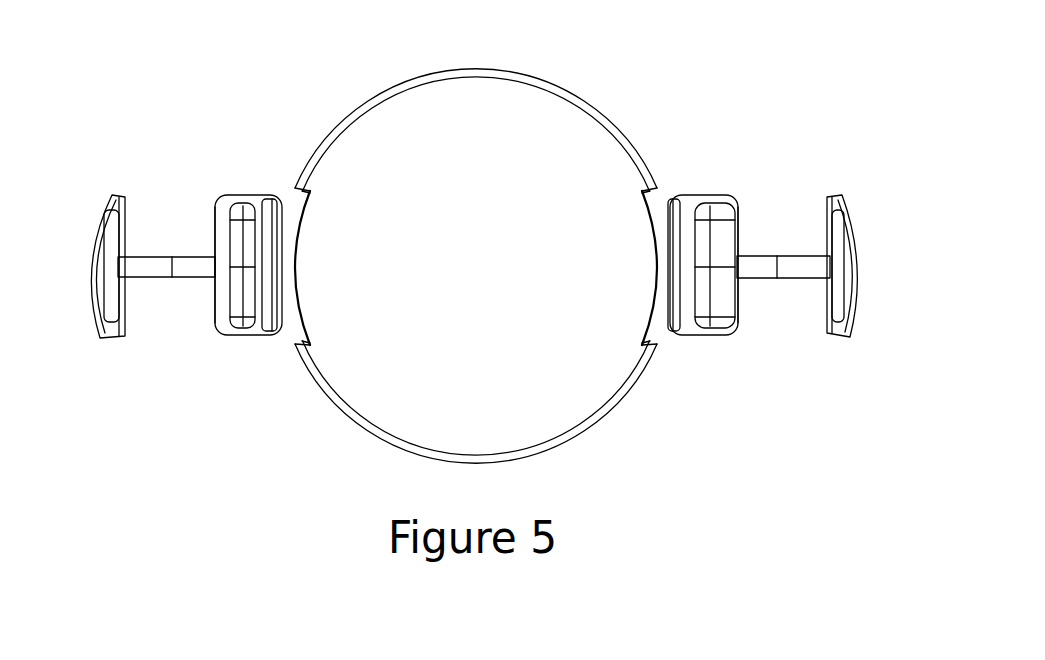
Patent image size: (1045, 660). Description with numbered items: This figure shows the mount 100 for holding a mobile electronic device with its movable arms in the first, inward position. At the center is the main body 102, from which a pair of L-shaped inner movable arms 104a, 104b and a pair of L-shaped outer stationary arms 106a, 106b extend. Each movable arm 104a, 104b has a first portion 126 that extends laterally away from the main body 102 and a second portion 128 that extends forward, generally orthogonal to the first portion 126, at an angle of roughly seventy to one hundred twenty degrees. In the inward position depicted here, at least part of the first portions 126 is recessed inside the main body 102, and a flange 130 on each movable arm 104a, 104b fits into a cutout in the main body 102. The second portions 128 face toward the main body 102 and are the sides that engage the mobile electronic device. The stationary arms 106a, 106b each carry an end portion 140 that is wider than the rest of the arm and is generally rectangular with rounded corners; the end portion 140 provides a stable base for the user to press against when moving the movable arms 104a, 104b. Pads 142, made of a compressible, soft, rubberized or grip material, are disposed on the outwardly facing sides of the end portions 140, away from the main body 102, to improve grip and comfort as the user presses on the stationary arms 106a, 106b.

The mount 100 is at (881, 107).
The main body 102 is at (463, 103).
The movable arm 104a is at (724, 310).
The movable arm 104b is at (262, 334).
The stationary arm 106a is at (800, 263).
The stationary arm 106b is at (142, 258).
The first portion 126 is at (268, 195).
The second portion 128 is at (218, 290).
The flange 130 is at (294, 189).
The end portion 140 is at (118, 193).
The pad 142 is at (92, 293).